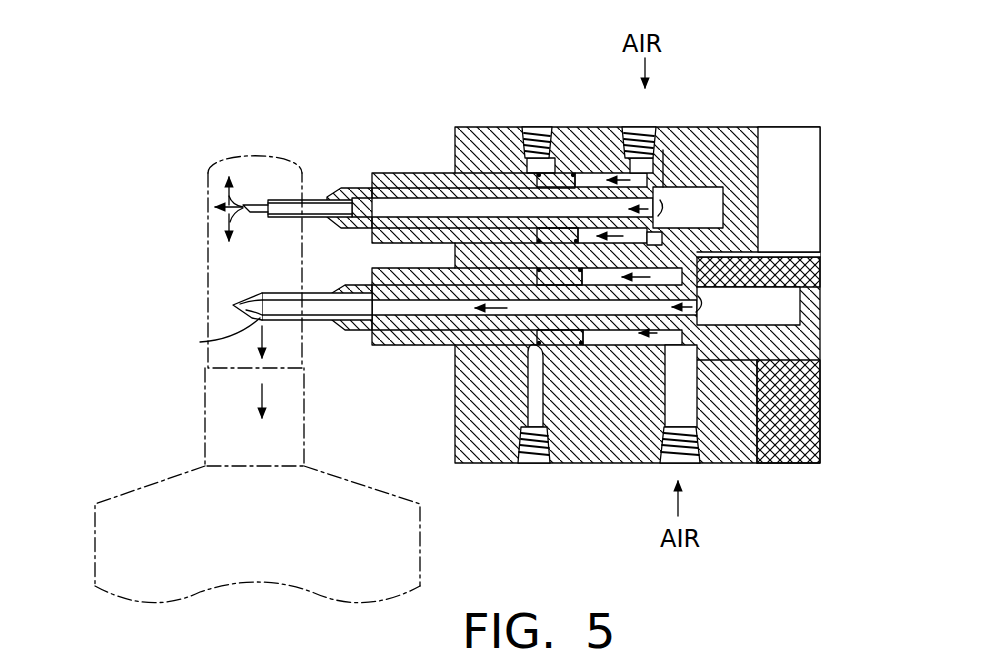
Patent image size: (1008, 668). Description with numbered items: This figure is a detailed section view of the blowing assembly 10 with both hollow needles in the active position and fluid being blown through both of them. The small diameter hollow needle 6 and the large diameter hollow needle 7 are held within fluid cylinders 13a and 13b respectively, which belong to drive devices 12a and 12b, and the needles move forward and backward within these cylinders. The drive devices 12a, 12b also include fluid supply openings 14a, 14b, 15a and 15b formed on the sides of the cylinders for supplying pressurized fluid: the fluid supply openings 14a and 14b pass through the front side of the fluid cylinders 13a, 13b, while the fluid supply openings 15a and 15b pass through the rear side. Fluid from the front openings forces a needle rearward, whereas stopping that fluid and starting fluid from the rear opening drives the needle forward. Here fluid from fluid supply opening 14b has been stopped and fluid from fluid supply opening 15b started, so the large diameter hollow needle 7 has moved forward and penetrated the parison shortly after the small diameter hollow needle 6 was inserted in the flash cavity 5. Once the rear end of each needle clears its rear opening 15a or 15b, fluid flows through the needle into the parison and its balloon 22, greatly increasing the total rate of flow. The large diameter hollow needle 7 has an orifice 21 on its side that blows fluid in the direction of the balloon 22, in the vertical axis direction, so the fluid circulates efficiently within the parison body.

The filling head assembly 10 is at (766, 44).
The flash cavity 5 is at (208, 262).
The small diameter hollow needle 6 is at (362, 187).
The large diameter hollow needle 7 is at (356, 331).
The orifice 21 is at (258, 318).
The balloon 22 is at (269, 270).
The drive device 12a is at (748, 126).
The drive device 12b is at (780, 465).
The fluid cylinder 13a is at (563, 172).
The fluid cylinder 13b is at (613, 337).
The fluid supply opening 14a is at (540, 125).
The fluid supply opening 14b is at (532, 465).
The fluid supply opening 15a is at (635, 166).
The fluid supply opening 15b is at (684, 466).